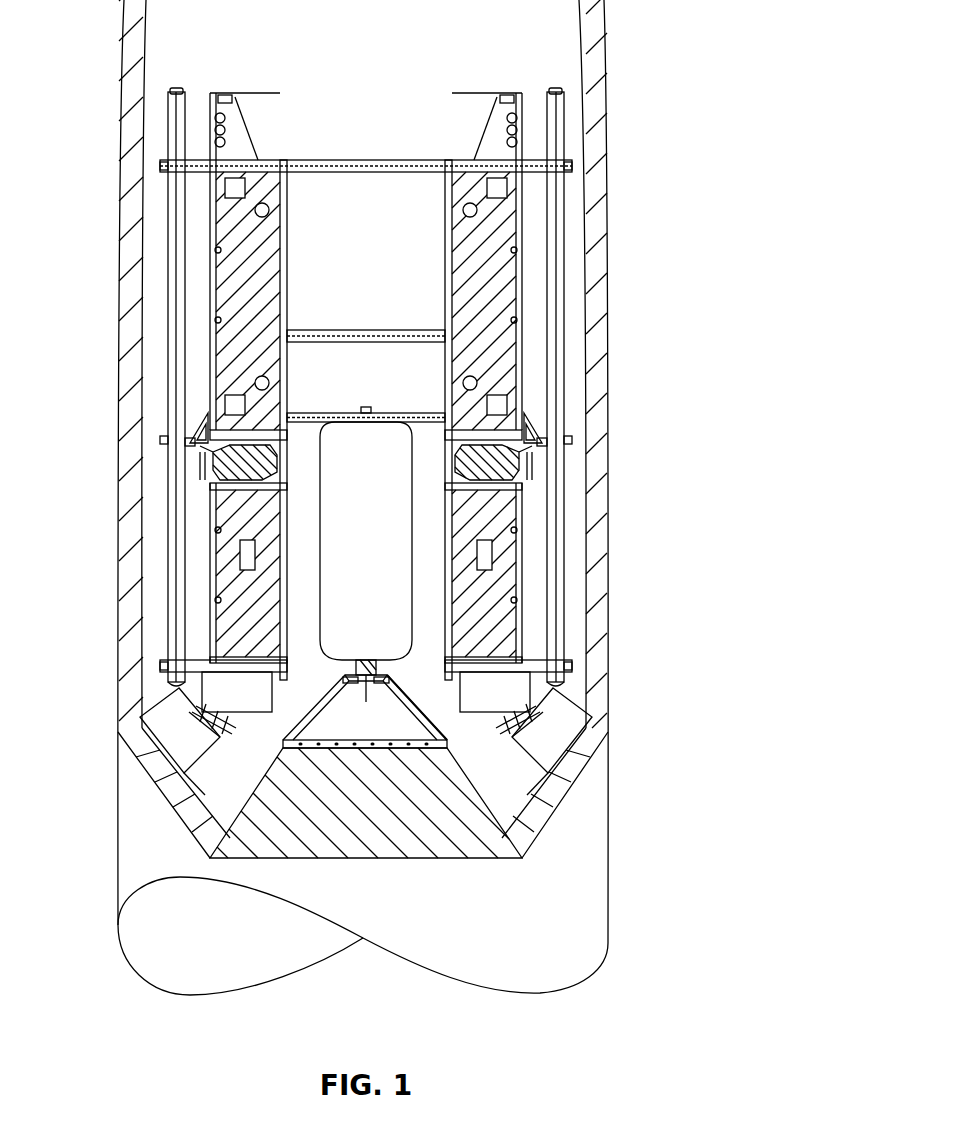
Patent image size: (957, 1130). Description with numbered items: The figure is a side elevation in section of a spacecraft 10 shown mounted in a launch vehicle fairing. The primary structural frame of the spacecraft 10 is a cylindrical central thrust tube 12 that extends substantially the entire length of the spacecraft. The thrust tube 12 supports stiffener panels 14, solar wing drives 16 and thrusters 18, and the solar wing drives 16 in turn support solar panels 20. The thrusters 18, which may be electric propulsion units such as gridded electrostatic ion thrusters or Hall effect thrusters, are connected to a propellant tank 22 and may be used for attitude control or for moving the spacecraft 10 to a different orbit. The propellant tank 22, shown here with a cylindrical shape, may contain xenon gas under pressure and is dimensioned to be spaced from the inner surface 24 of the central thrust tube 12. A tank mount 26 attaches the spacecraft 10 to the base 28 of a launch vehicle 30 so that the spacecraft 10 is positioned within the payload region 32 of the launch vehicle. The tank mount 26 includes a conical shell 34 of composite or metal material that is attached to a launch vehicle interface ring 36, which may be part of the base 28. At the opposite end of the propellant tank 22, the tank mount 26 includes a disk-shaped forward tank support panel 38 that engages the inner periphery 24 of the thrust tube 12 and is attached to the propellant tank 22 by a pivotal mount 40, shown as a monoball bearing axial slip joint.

The spacecraft 10 is at (267, 129).
The central thrust tube 12 is at (287, 225).
The stiffener panels 14 is at (237, 128).
The solar wing drives 16 is at (215, 462).
The thrusters 18 is at (165, 727).
The solar panels 20 is at (170, 128).
The propellant tank 22 is at (352, 560).
The inner surface 24 is at (287, 302).
The tank mount 26 is at (401, 691).
The base 28 is at (496, 872).
The launch vehicle 30 is at (568, 762).
The payload region 32 is at (369, 50).
The conical shell 34 is at (322, 700).
The launch vehicle interface ring 36 is at (386, 740).
The forward tank support panel 38 is at (326, 412).
The pivotal mount 40 is at (366, 407).